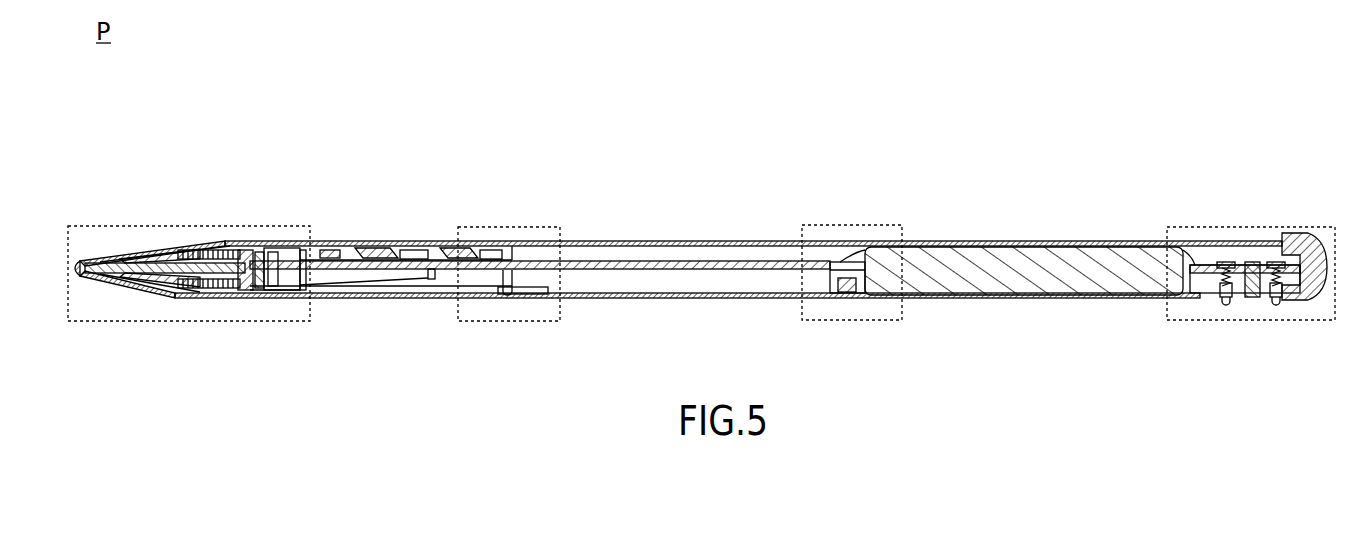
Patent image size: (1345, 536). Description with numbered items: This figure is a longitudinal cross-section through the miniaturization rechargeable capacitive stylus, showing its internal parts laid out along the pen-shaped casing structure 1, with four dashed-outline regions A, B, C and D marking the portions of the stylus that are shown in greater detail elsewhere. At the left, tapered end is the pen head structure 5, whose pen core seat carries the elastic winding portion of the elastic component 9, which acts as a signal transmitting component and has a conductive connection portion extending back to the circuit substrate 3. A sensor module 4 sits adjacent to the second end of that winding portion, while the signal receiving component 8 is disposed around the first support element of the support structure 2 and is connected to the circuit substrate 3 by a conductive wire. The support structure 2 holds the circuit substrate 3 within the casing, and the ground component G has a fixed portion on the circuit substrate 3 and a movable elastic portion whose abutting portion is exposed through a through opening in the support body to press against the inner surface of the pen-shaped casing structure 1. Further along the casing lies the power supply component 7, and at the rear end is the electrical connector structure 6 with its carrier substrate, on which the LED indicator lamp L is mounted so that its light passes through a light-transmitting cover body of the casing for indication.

The pen-shaped casing structure 1 is at (742, 238).
The support structure 2 is at (618, 288).
The circuit substrate 3 is at (686, 262).
The sensor module 4 is at (256, 250).
The pen head structure 5 is at (98, 250).
The electrical connector structure 6 is at (1227, 258).
The power supply component 7 is at (990, 255).
The signal receiving component 8 is at (147, 243).
The elastic component 9 is at (206, 244).
The ground component G is at (516, 282).
The LED indicator lamp L is at (1291, 250).
The section A is at (190, 321).
The section B is at (508, 321).
The section C is at (850, 320).
The section D is at (1250, 320).